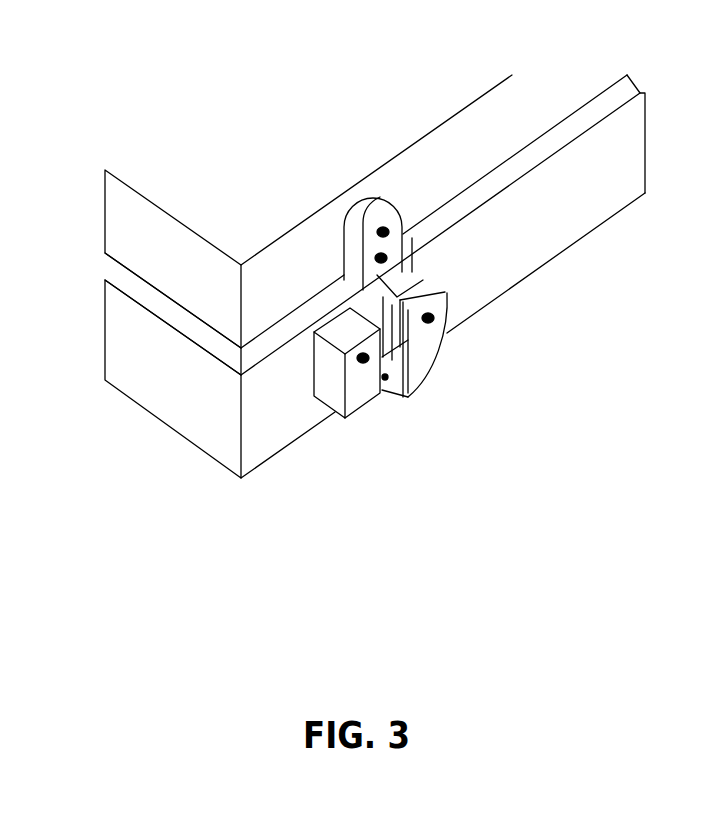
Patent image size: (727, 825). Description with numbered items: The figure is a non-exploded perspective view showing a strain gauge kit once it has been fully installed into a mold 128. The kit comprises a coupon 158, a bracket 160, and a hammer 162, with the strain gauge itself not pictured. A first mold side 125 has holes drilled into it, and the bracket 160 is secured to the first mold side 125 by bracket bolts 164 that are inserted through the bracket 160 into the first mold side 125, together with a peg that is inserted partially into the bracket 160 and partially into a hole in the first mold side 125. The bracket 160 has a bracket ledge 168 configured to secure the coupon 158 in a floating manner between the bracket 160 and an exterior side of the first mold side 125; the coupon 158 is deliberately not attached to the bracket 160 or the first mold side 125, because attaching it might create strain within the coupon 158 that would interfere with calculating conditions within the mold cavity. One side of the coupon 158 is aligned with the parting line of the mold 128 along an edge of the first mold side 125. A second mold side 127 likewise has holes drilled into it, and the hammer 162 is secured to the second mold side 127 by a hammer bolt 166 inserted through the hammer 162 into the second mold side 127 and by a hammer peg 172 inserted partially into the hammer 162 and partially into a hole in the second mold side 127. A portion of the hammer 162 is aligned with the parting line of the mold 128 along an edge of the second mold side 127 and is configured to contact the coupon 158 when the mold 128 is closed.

The first mold side 125 is at (273, 417).
The second mold side 127 is at (280, 273).
The mold 128 is at (143, 150).
The coupon 158 is at (373, 298).
The bracket 160 is at (377, 405).
The hammer 162 is at (360, 225).
The bracket bolts 164 is at (434, 320).
The hammer bolt 166 is at (386, 228).
The bracket ledge 168 is at (397, 310).
The hammer peg 172 is at (384, 257).